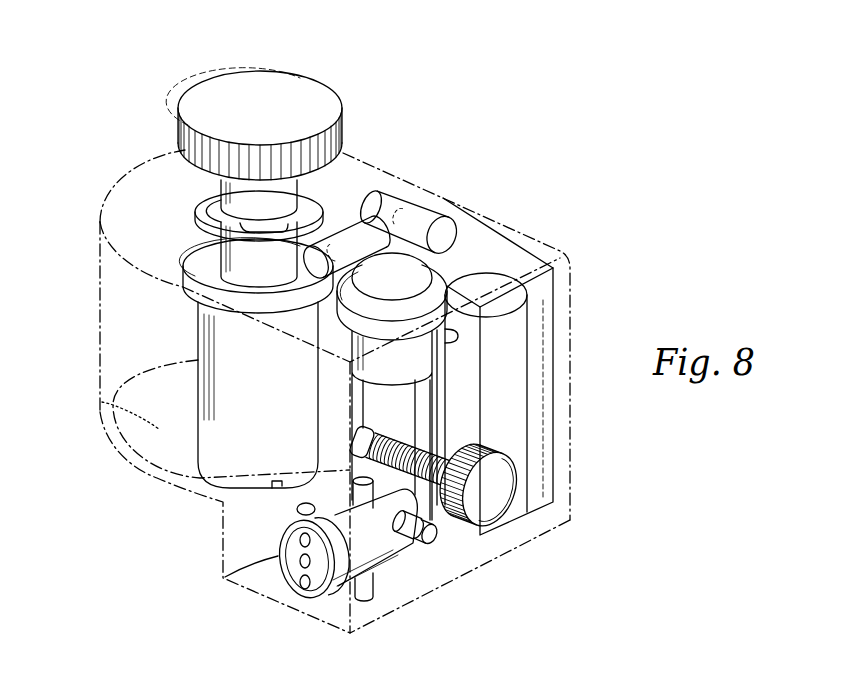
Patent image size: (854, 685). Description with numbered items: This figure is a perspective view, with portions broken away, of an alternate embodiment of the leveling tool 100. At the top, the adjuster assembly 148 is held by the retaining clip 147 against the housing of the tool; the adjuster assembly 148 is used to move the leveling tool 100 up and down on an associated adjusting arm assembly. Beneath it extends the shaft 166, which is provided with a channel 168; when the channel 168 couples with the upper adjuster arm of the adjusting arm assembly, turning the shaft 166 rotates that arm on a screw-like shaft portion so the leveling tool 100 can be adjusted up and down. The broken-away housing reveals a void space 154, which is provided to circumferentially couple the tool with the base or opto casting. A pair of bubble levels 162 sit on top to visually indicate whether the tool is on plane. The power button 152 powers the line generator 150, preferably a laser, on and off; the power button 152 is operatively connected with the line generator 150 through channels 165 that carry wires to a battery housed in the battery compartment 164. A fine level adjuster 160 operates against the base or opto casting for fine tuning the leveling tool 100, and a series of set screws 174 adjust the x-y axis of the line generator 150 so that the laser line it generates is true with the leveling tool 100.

The leveling tool 100 is at (654, 227).
The retaining clip 147 is at (203, 216).
The adjuster assembly 148 is at (295, 95).
The line generator 150 is at (227, 568).
The power button 152 is at (416, 275).
The void space 154 is at (100, 401).
The fine level adjuster 160 is at (490, 500).
The bubble levels 162 is at (427, 272).
The battery compartment 164 is at (512, 406).
The channels 165 is at (422, 412).
The shaft 166 is at (206, 368).
The channel 168 is at (276, 490).
The set screws 174 is at (305, 510).